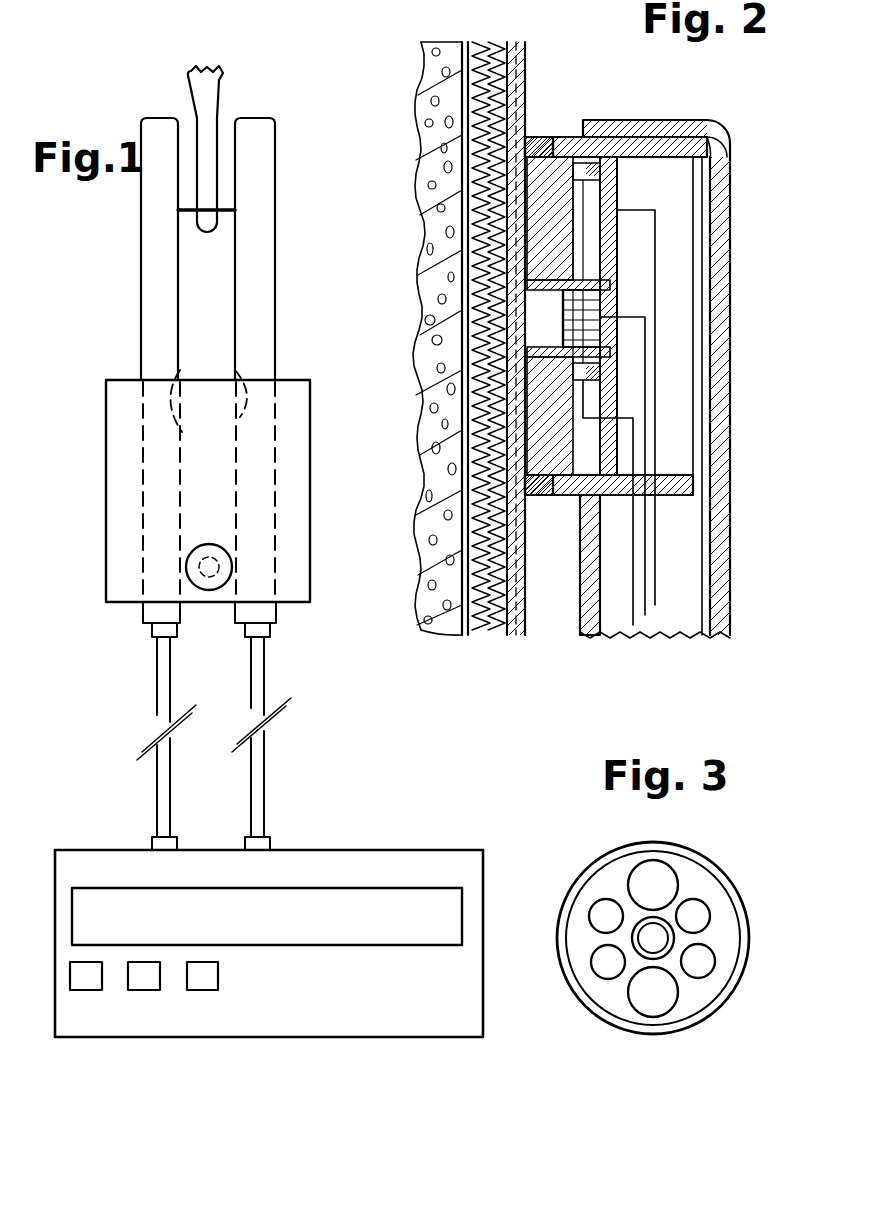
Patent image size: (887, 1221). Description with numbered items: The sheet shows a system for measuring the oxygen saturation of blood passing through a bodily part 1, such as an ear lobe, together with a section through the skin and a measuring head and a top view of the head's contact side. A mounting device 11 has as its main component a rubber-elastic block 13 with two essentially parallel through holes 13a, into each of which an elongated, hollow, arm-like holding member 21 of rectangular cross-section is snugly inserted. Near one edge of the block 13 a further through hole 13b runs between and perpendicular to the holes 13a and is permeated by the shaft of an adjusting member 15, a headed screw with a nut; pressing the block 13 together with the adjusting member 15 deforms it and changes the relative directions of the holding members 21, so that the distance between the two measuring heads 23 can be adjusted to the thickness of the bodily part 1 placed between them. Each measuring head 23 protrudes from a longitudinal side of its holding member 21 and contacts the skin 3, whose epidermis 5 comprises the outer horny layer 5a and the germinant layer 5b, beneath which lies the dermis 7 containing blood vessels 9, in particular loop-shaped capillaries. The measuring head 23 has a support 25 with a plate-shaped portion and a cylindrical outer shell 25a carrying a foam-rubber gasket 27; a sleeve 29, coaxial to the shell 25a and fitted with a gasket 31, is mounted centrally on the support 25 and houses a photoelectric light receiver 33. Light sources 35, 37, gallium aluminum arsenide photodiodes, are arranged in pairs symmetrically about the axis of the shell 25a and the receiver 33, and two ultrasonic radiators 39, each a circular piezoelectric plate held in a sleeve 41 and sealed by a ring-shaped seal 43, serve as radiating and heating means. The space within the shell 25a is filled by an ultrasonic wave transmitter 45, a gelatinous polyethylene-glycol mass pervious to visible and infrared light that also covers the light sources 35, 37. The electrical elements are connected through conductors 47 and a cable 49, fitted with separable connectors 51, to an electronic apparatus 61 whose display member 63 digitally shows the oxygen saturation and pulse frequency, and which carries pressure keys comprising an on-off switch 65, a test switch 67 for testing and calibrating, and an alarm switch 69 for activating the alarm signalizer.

In FIG. 1, the bodily part 1 is at (207, 233).
In FIG. 2, the bodily part 1 is at (542, 74).
In FIG. 2, the skin 3 is at (528, 612).
In FIG. 2, the epidermis 5 is at (498, 640).
In FIG. 2, the horny layer 5a is at (514, 640).
In FIG. 2, the germinant layer 5b is at (466, 640).
In FIG. 2, the dermis 7 is at (424, 640).
In FIG. 2, the blood vessels 9 is at (445, 530).
In FIG. 1, the mounting device 11 is at (98, 534).
In FIG. 1, the rubber-elastic block 13 is at (110, 604).
In FIG. 1, the through holes 13a is at (238, 372).
In FIG. 1, the through hole 13b is at (204, 592).
In FIG. 1, the adjusting member 15 is at (208, 544).
In FIG. 1, the holding member 21 is at (141, 335).
In FIG. 2, the holding member 21 is at (731, 598).
In FIG. 1, the measuring head 23 is at (188, 118).
In FIG. 2, the measuring head 23 is at (560, 510).
In FIG. 3, the measuring head 23 is at (590, 850).
In FIG. 2, the support 25 is at (696, 190).
In FIG. 2, the outer shell 25a is at (566, 137).
In FIG. 2, the gasket 27 is at (540, 137).
In FIG. 3, the gasket 27 is at (578, 876).
In FIG. 2, the sleeve 29 is at (545, 250).
In FIG. 2, the gasket 31 is at (562, 360).
In FIG. 2, the photoelectric light receiver 33 is at (575, 322).
In FIG. 3, the photoelectric light receiver 33 is at (643, 948).
In FIG. 3, the light source 35 is at (697, 903).
In FIG. 3, the light source 37 is at (592, 916).
In FIG. 2, the ultrasonic radiator 39 is at (600, 177).
In FIG. 3, the ultrasonic radiator 39 is at (655, 870).
In FIG. 2, the sleeve 41 is at (620, 120).
In FIG. 2, the ring-shaped seal 43 is at (712, 158).
In FIG. 2, the ultrasonic wave transmitter 45 is at (470, 418).
In FIG. 2, the conductors 47 is at (636, 460).
In FIG. 1, the cable 49 is at (251, 768).
In FIG. 1, the connector 51 is at (152, 634).
In FIG. 1, the electronic apparatus 61 is at (120, 1038).
In FIG. 1, the display member 63 is at (145, 888).
In FIG. 1, the on-off switch 65 is at (84, 992).
In FIG. 1, the test switch 67 is at (142, 992).
In FIG. 1, the alarm switch 69 is at (200, 992).